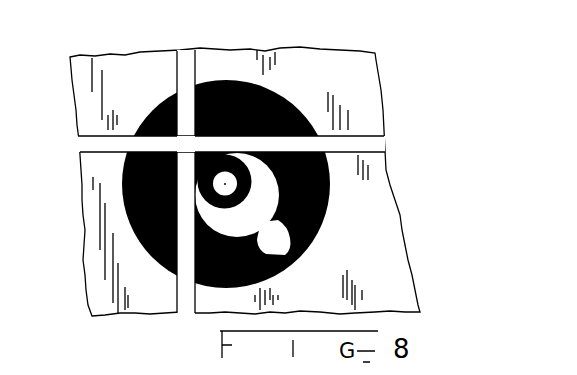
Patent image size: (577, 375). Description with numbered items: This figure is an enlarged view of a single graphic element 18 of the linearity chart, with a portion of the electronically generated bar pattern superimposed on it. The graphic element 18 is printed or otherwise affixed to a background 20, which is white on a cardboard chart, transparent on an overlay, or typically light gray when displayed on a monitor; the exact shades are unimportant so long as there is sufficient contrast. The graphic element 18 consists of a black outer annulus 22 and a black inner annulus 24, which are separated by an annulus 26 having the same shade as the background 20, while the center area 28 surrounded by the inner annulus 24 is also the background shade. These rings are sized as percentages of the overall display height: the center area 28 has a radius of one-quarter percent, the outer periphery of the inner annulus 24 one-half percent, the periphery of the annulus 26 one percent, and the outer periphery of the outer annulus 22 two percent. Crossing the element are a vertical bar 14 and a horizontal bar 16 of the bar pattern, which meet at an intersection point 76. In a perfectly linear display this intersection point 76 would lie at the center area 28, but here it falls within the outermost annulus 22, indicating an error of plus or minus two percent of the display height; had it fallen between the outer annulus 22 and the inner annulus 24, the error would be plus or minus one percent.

The vertical bars 14 is at (185, 95).
The horizontal bars 16 is at (367, 141).
The graphic element 18 is at (320, 248).
The background 20 is at (388, 228).
The outer annulus 22 is at (332, 193).
The inner annulus 24 is at (242, 210).
The annulus 26 is at (258, 207).
The center area 28 is at (220, 174).
The intersection point 76 is at (189, 130).